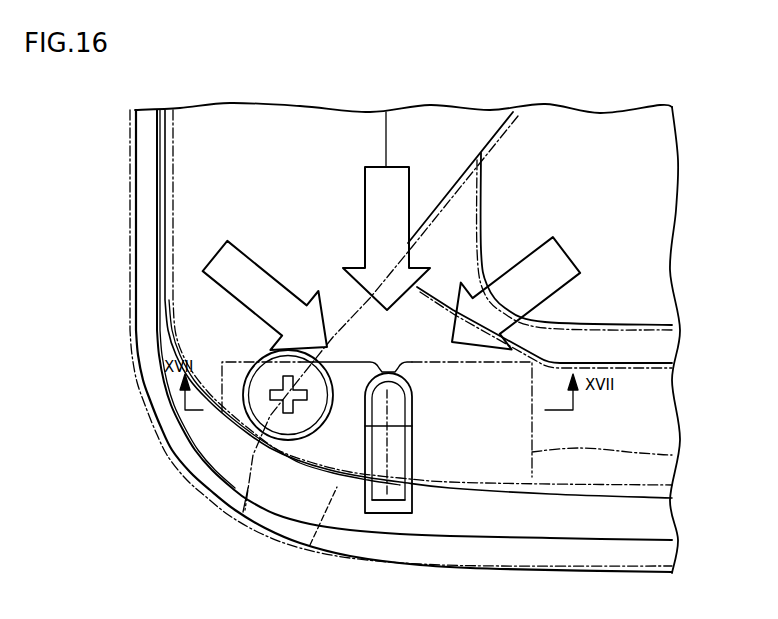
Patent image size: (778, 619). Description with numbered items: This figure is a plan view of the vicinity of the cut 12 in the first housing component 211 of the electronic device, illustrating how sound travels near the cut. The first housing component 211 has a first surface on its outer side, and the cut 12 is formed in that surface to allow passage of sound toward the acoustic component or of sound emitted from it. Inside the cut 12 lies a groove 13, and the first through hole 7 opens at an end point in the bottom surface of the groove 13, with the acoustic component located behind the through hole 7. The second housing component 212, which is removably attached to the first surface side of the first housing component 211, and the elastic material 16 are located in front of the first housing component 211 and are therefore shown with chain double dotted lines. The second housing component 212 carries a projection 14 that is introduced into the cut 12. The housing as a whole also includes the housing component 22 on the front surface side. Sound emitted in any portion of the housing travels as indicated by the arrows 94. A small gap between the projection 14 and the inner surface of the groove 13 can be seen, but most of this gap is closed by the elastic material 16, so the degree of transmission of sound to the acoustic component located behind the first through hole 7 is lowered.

The first housing component 211 is at (222, 132).
The second housing component 212 is at (133, 210).
The arrow 94 is at (263, 267).
The elastic material 16 is at (680, 453).
The housing component 22 is at (355, 537).
The cut 12 is at (363, 440).
The first through hole 7 is at (392, 407).
The groove 13 is at (395, 487).
The projection 14 is at (310, 545).